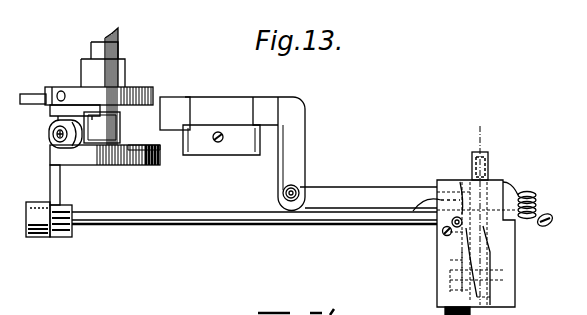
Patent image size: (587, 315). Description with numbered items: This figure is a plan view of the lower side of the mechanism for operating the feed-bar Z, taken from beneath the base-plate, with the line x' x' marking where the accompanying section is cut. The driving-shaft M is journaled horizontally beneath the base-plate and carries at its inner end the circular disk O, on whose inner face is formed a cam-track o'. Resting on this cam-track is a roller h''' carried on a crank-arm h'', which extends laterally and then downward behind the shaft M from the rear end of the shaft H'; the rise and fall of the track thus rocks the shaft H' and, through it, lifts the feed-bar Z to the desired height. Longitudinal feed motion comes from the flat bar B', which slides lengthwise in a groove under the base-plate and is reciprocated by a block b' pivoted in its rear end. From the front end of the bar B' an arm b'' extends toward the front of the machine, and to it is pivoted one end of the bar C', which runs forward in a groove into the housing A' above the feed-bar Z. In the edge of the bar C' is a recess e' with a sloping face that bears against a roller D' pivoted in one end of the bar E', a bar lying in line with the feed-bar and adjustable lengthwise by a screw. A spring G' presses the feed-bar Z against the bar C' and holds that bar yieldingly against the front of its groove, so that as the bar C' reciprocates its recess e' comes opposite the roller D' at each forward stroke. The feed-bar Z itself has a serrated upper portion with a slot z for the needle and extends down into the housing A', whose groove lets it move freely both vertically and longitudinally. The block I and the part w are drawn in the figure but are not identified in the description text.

The shaft M is at (118, 37).
The shaft w is at (86, 96).
The block b' is at (51, 116).
The block I is at (102, 127).
The roller h''' is at (52, 139).
The circular plate or disk O is at (118, 158).
The cam-track o' is at (144, 139).
The crank-arm h'' is at (52, 201).
The bar B' is at (232, 123).
The arm b'' is at (291, 154).
The bar C' is at (368, 197).
The recess e' is at (436, 206).
The shaft H' is at (254, 229).
The roller D' is at (476, 239).
The section line x' is at (480, 209).
The longitudinal slot z is at (487, 165).
The feed-bar Z is at (486, 157).
The spring G' is at (532, 205).
The bar E' is at (434, 242).
The housing A' is at (439, 266).